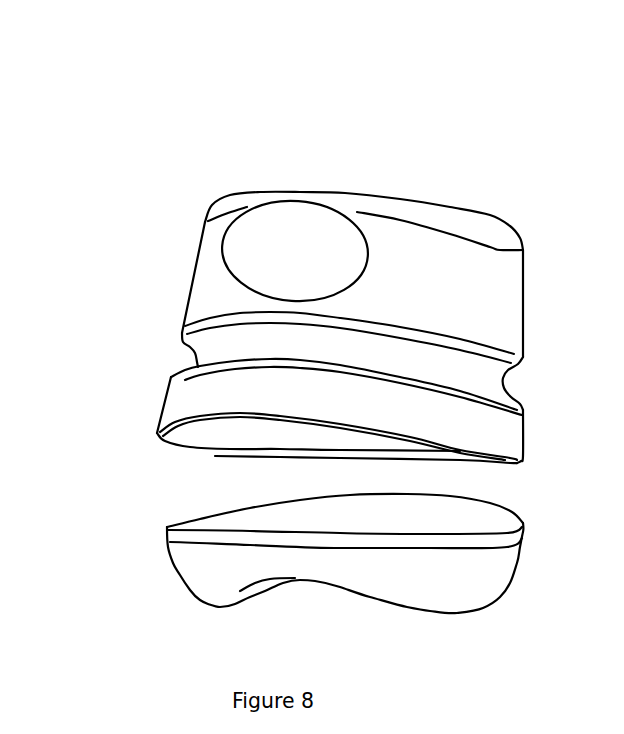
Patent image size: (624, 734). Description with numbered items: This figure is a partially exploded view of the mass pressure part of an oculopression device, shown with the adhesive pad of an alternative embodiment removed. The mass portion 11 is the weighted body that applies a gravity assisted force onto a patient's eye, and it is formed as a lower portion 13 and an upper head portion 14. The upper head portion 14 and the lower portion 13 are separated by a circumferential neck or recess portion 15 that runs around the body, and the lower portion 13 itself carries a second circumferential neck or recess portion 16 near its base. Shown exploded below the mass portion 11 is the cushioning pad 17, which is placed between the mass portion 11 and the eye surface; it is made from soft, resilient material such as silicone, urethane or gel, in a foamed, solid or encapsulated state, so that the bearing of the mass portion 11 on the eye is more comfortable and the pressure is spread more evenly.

The mass portion 11 is at (155, 222).
The lower portion 13 is at (157, 408).
The upper head portion 14 is at (268, 193).
The circumferential neck or recess portion 15 is at (240, 340).
The second circumferential neck or recess portion 16 is at (222, 447).
The cushioning pad 17 is at (220, 567).